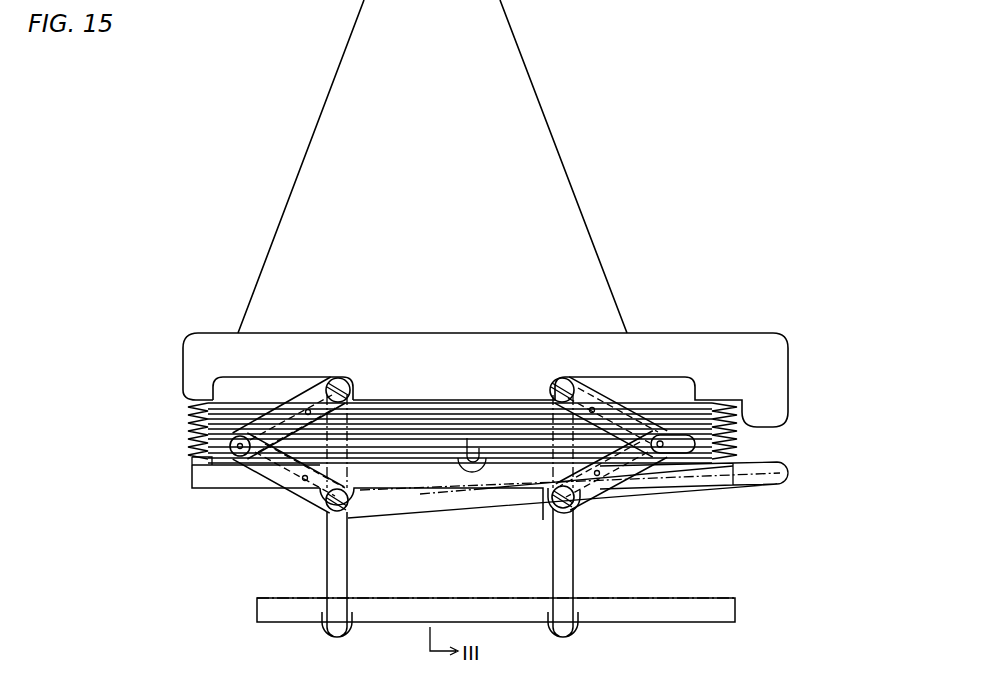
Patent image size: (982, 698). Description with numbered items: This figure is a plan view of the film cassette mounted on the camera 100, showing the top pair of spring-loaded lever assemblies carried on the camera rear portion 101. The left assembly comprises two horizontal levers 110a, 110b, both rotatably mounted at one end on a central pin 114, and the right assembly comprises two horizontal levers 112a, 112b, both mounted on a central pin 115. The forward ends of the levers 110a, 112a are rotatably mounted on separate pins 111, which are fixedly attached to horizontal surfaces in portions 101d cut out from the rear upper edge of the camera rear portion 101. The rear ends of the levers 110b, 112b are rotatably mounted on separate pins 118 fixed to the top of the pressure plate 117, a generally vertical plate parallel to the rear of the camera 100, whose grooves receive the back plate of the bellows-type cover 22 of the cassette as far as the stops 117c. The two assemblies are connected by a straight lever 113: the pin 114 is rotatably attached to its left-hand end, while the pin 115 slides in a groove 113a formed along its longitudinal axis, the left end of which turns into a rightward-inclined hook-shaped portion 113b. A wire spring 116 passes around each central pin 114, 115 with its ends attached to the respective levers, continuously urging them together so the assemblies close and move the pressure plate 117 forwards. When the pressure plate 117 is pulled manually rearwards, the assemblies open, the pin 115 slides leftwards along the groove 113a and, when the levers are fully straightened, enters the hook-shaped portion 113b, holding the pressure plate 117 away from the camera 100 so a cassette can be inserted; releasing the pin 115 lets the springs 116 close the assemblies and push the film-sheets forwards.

The camera 100 is at (551, 127).
The camera rear portion 101 is at (742, 352).
The cut-out portions 101d is at (238, 390).
The lever 110a is at (313, 397).
The lever 110b is at (302, 480).
The pins 111 is at (343, 385).
The lever 112a is at (590, 398).
The lever 112b is at (633, 467).
The straight lever 113 is at (425, 447).
The groove 113a is at (527, 443).
The hook-shaped portion 113b is at (470, 443).
The pin 114 is at (193, 437).
The pin 115 is at (672, 453).
The wire spring 116 is at (280, 468).
The pressure plate 117 is at (413, 480).
The stops 117c is at (207, 462).
The pins 118 is at (335, 505).
The bellows-type cover 22 is at (737, 457).